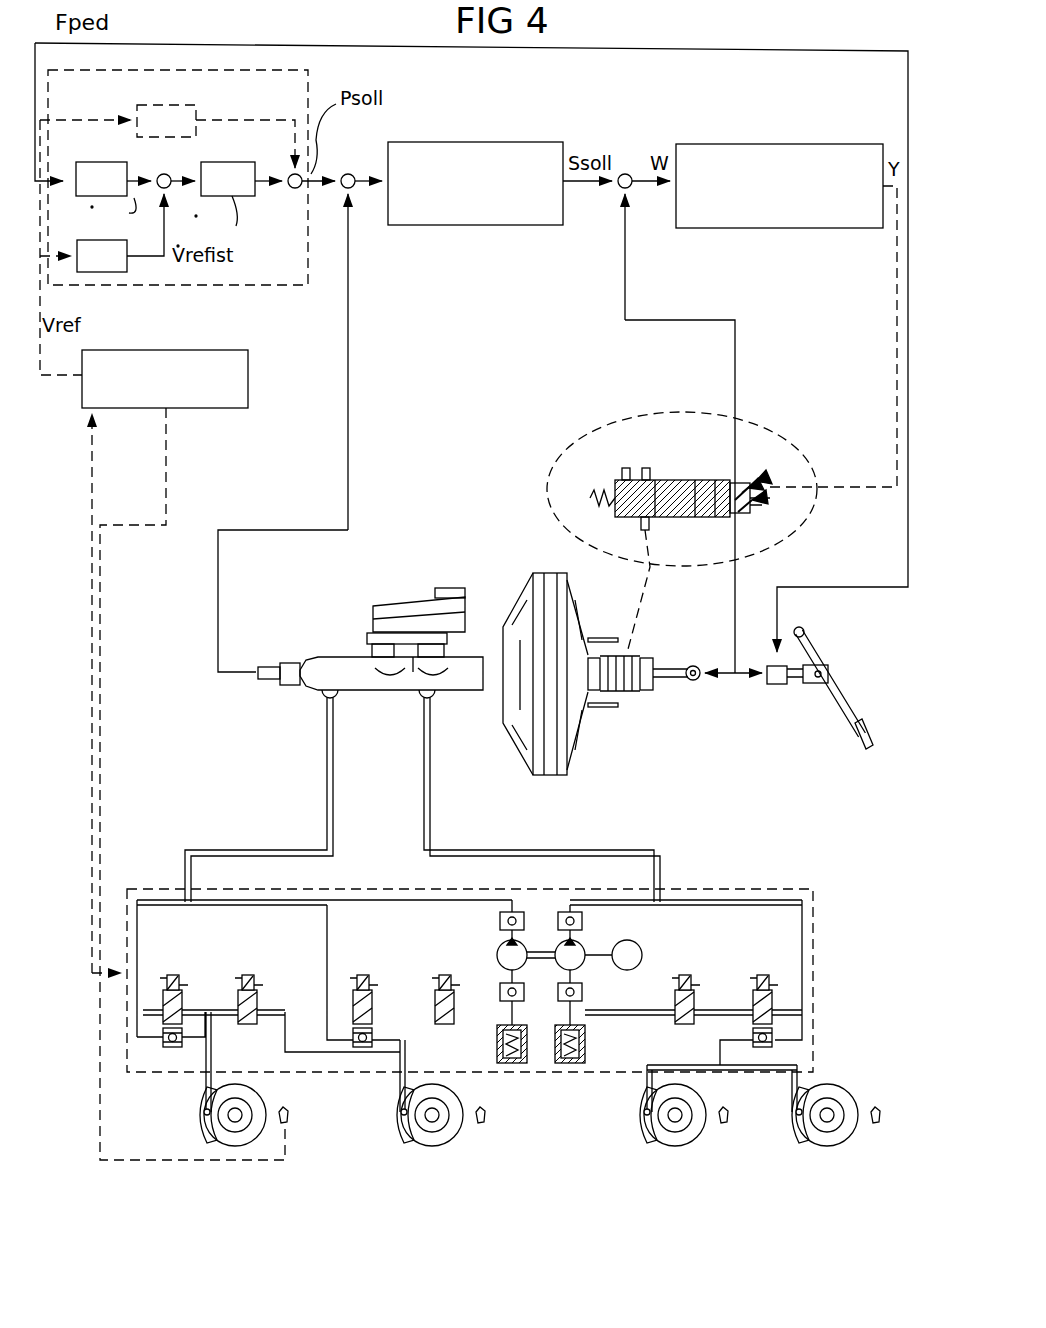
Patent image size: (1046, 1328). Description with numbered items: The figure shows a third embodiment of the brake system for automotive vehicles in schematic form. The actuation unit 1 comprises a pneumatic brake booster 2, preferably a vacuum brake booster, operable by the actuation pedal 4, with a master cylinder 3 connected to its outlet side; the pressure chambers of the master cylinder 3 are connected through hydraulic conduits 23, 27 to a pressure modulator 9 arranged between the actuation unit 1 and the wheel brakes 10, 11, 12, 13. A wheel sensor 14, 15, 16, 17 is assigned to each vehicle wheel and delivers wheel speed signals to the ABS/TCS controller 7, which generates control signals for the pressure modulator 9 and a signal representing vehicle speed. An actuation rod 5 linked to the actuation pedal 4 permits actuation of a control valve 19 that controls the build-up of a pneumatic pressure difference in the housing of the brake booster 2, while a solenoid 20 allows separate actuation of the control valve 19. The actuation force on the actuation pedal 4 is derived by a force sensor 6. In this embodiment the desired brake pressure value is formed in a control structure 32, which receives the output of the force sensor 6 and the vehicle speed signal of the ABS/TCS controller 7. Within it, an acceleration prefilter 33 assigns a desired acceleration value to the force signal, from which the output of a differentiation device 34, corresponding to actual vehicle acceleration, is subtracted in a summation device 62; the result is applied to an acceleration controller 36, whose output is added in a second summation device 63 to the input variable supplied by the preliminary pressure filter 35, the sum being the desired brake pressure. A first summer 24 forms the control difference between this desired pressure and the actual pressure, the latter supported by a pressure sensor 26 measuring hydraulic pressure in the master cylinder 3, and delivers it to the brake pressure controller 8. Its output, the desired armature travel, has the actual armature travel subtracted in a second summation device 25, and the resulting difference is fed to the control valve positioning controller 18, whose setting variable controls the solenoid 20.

The actuation unit 1 is at (496, 570).
The pneumatic brake booster 2 is at (584, 737).
The master cylinder 3 is at (318, 645).
The actuation pedal 4 is at (845, 710).
The actuation rod 5 is at (672, 690).
The force sensor 6 is at (776, 684).
The ABS/TCS controller 7 is at (210, 350).
The brake pressure controller 8 is at (496, 225).
The pressure modulator 9 is at (815, 985).
The wheel brake 10 is at (200, 1128).
The wheel brake 11 is at (398, 1126).
The wheel brake 12 is at (640, 1126).
The wheel brake 13 is at (795, 1124).
The wheel sensor 14 is at (287, 1118).
The wheel sensor 15 is at (484, 1118).
The wheel sensor 16 is at (727, 1118).
The wheel sensor 17 is at (880, 1112).
The control valve positioning controller 18 is at (780, 228).
The control valve 19 is at (778, 520).
The solenoid 20 is at (745, 478).
The hydraulic conduit 23 is at (431, 778).
The first summer 24 is at (346, 172).
The second summation device 25 is at (628, 172).
The pressure sensor 26 is at (270, 680).
The hydraulic conduit 27 is at (326, 790).
The control structure 32 is at (262, 286).
The acceleration prefilter 33 is at (95, 162).
The differentiation device 34 is at (105, 272).
The preliminary pressure filter 35 is at (143, 105).
The acceleration controller 36 is at (232, 162).
The summation device 62 is at (158, 174).
The second summation device 63 is at (290, 172).